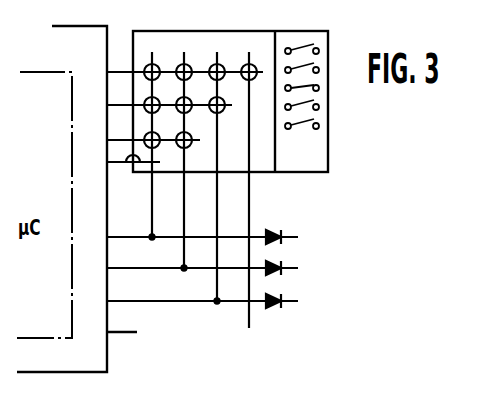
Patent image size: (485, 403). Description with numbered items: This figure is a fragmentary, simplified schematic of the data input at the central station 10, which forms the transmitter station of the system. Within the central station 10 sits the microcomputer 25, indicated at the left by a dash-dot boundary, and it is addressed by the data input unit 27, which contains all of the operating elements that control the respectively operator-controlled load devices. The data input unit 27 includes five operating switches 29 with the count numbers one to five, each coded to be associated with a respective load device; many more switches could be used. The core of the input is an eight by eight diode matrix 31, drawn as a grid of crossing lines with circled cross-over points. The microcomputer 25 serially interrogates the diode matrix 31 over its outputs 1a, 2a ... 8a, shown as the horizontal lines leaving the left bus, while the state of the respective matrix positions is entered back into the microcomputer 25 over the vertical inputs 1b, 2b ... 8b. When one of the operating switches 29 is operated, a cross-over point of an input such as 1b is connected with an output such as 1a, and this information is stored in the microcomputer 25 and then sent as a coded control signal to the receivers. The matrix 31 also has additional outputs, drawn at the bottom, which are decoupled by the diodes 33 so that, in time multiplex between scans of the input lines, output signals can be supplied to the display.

The output 1a is at (138, 72).
The output 2a is at (138, 105).
The output 8a is at (133, 169).
The input 1b is at (150, 202).
The input 2b is at (183, 217).
The input 8b is at (247, 318).
The central station 10 is at (93, 358).
The microcomputer 25 is at (36, 326).
The data input unit 27 is at (338, 33).
The operating switches 29 is at (320, 148).
The diode matrix 31 is at (247, 33).
The diodes 33 is at (273, 296).